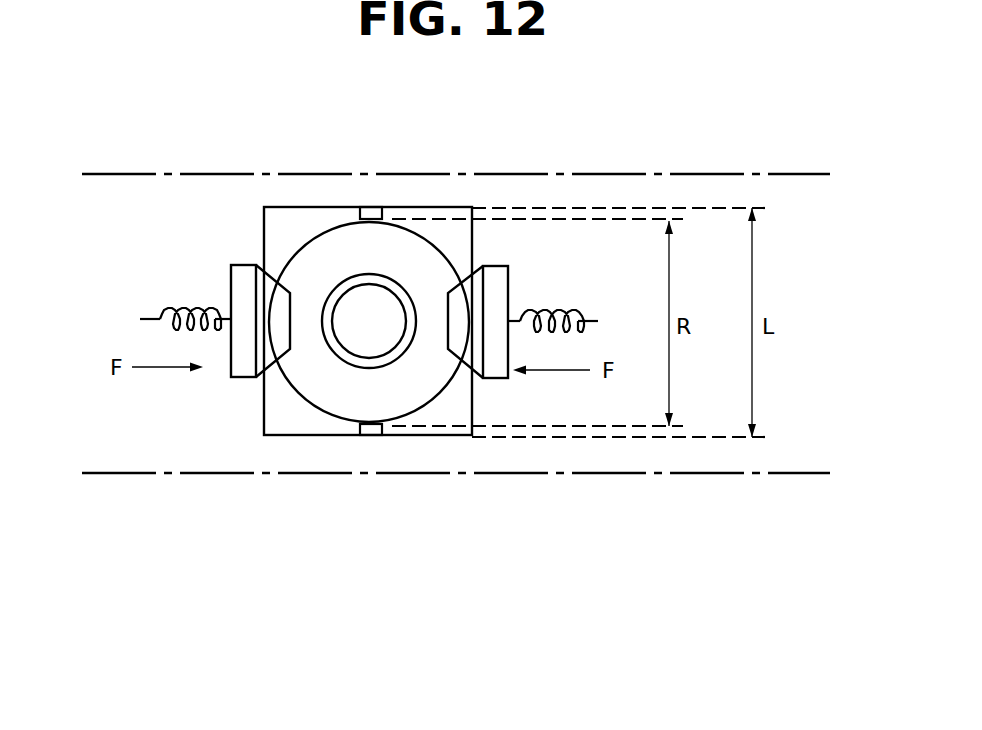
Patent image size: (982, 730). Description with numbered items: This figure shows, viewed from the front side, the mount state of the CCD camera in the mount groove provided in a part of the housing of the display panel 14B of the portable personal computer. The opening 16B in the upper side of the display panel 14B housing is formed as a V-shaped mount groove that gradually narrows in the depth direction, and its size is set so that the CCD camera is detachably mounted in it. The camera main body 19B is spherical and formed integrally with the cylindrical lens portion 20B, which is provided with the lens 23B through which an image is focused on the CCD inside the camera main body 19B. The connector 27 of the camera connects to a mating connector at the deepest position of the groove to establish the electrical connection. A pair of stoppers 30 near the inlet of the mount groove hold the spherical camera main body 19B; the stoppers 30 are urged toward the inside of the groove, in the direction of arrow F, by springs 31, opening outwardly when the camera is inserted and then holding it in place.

The display panel 14B is at (760, 172).
The opening 16B is at (290, 233).
The camera main body 19B is at (440, 263).
The lens portion 20B is at (403, 352).
The lens 23B is at (350, 328).
The connector 27 is at (368, 207).
The stoppers 30 is at (237, 265).
The springs 31 is at (180, 305).